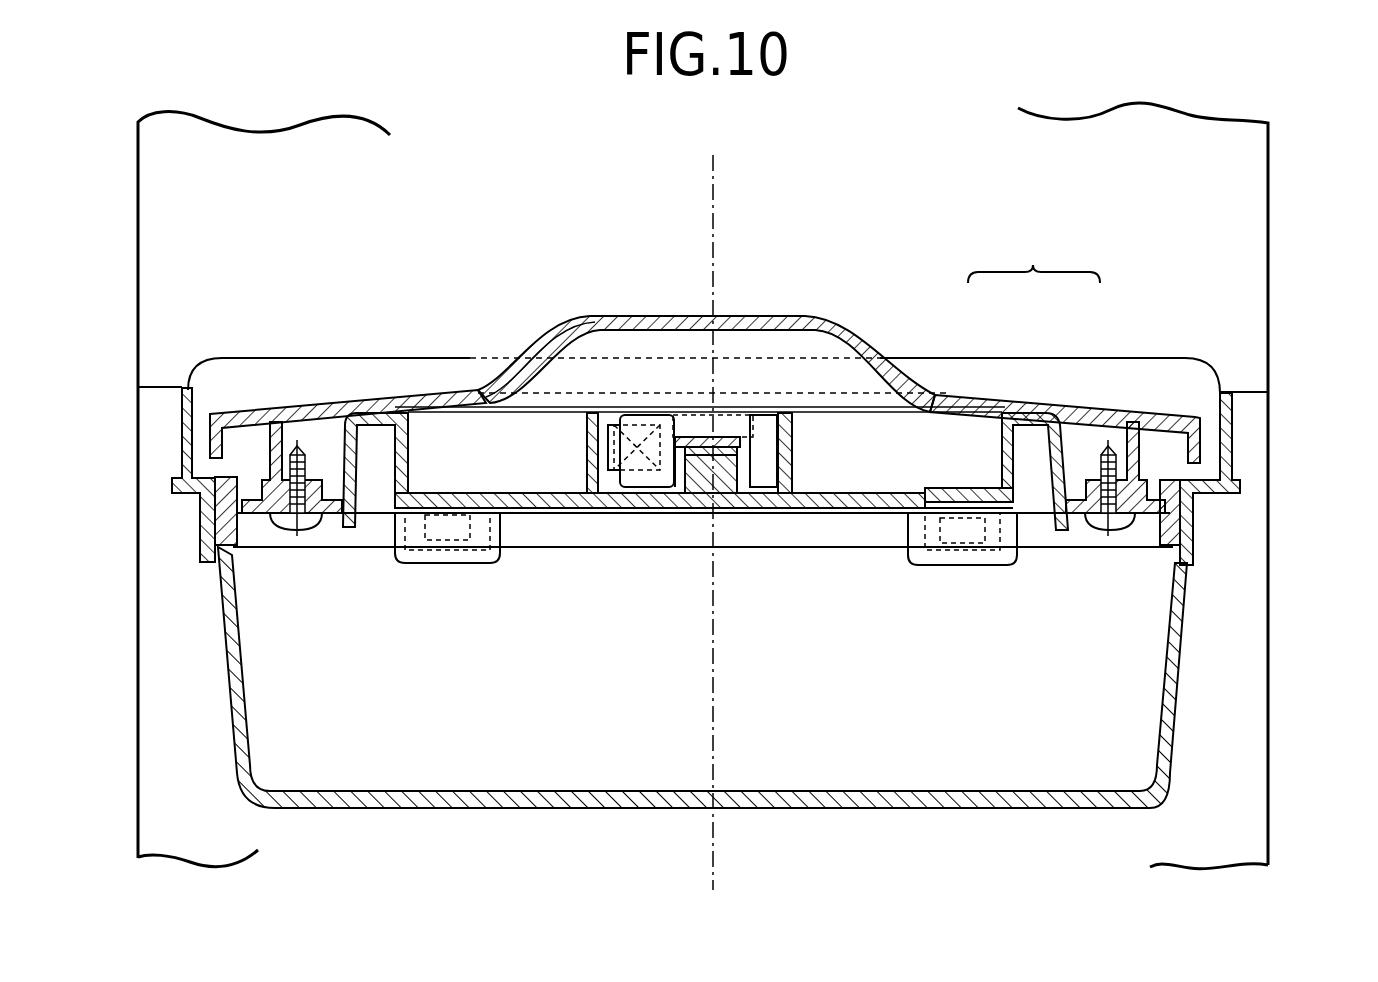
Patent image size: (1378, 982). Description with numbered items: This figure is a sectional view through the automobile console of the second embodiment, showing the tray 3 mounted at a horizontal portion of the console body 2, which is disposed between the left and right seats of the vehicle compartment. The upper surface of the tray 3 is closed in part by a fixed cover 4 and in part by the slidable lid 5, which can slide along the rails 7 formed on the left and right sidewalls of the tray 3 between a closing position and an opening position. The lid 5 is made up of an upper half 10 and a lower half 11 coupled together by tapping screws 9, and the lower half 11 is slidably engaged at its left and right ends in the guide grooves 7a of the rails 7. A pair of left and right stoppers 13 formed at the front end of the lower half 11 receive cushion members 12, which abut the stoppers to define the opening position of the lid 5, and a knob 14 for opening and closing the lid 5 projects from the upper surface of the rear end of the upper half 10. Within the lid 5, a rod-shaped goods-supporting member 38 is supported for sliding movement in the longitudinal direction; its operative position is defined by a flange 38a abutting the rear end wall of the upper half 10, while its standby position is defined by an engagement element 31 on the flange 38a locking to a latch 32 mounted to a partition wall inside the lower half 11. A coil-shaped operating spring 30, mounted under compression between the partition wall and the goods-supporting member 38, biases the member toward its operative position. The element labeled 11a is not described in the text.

The console body 2 is at (1268, 240).
The tray 3 is at (773, 805).
The fixed cover 4 is at (600, 548).
The lid 5 is at (1034, 258).
The rail 7 is at (205, 497).
The guide groove 7a is at (230, 518).
The tapping screw 9 is at (305, 528).
The upper half 10 is at (948, 392).
The lower half 11 is at (1122, 378).
The mounting bracket 11a is at (265, 523).
The cushion member 12 is at (455, 545).
The stopper 13 is at (415, 565).
The knob 14 is at (657, 318).
The operating spring 30 is at (690, 410).
The engagement element 31 is at (640, 512).
The latch 32 is at (585, 450).
The goods-supporting member 38 is at (735, 436).
The flange 38a is at (762, 428).